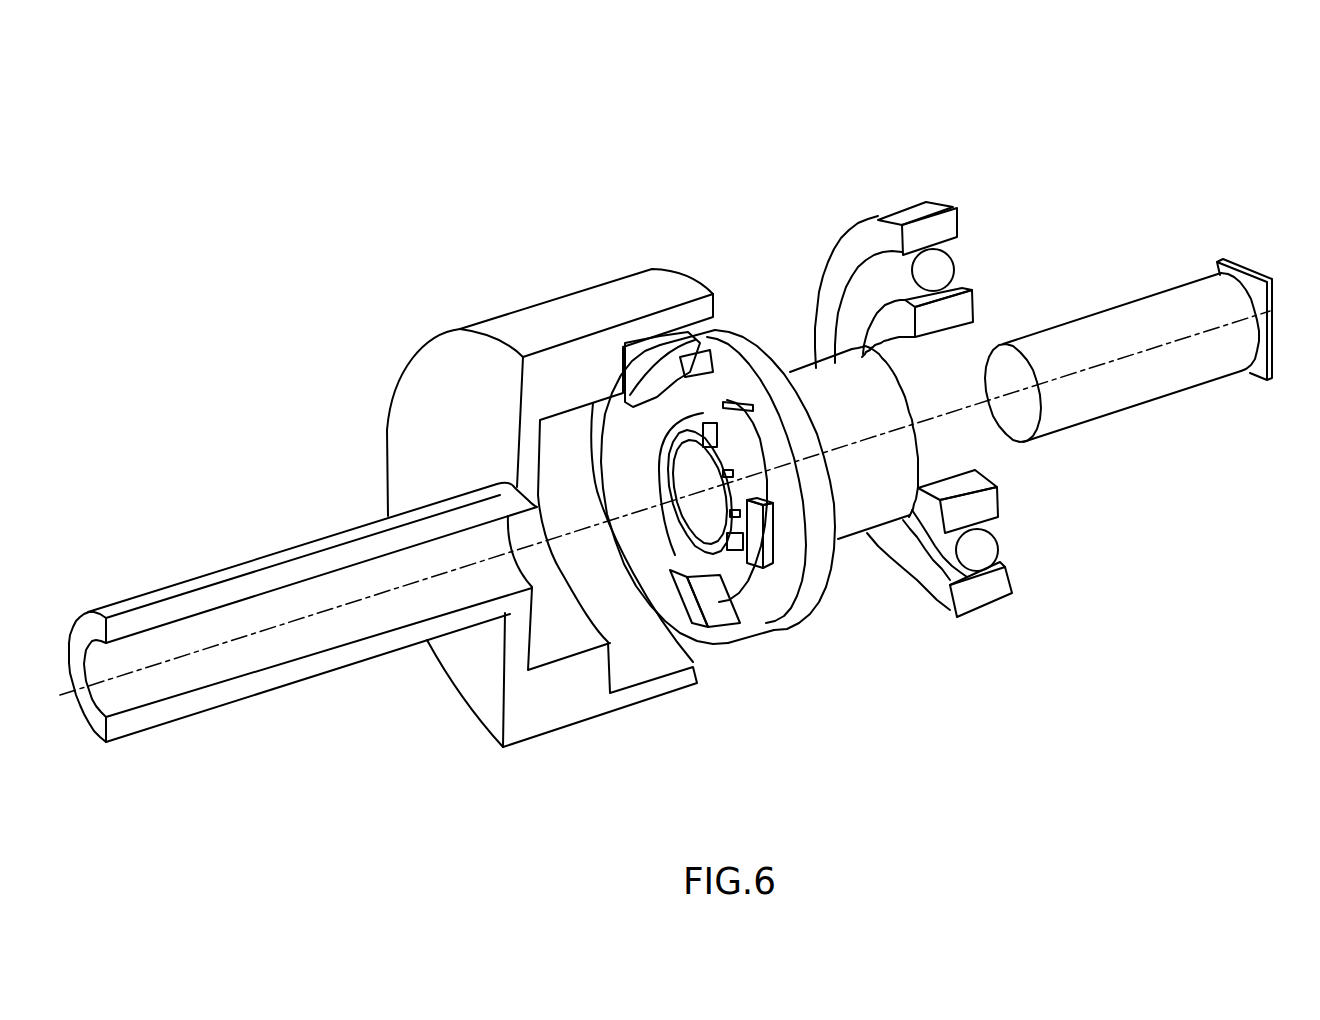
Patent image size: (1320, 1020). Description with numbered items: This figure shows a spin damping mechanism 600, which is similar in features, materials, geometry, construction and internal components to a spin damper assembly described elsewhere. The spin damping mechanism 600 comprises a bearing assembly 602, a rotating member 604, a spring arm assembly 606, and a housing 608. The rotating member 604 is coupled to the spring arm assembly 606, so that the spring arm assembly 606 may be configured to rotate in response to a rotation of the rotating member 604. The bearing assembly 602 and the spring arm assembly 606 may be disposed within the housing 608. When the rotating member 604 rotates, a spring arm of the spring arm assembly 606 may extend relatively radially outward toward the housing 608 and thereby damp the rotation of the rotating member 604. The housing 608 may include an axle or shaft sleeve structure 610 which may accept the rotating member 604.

The spin damping mechanism 600 is at (823, 146).
The bearing assembly 602 is at (948, 218).
The rotating member 604 is at (1113, 324).
The spring arm assembly 606 is at (755, 316).
The housing 608 is at (583, 286).
The shaft sleeve structure 610 is at (289, 556).